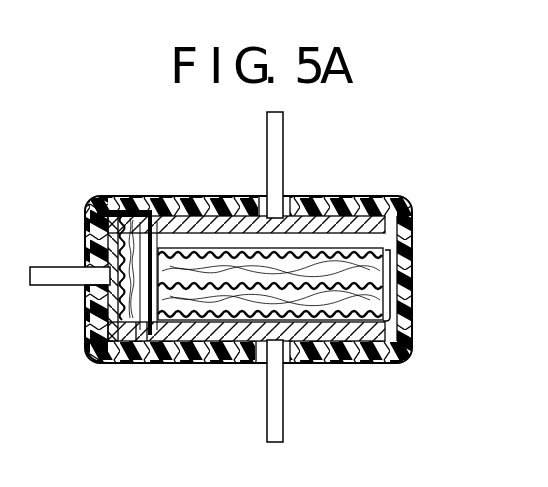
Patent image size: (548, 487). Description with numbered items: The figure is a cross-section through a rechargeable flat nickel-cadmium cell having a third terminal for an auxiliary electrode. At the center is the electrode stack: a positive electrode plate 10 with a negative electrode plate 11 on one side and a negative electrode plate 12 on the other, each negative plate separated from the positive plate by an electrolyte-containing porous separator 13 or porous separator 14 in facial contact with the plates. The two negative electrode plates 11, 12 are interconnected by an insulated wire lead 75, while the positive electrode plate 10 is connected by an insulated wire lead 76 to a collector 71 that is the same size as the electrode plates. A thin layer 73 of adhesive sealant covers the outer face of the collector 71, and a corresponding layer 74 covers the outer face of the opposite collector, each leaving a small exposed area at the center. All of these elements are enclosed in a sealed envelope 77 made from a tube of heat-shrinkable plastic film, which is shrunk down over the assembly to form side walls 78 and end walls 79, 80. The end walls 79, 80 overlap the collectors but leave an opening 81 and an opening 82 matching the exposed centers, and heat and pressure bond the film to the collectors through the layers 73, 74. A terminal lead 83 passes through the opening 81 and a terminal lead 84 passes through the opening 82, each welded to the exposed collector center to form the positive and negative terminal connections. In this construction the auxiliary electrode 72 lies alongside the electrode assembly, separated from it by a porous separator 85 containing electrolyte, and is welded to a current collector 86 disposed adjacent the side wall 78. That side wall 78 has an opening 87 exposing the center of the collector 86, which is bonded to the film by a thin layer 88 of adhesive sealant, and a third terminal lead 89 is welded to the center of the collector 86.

The positive electrode plate 10 is at (381, 292).
The negative electrode plate 11 is at (382, 252).
The negative electrode plate 12 is at (383, 325).
The porous separator 13 is at (380, 270).
The porous separator 14 is at (382, 307).
The collector 71 is at (343, 225).
The auxiliary electrode 72 is at (107, 358).
The layer of adhesive sealant 73 is at (303, 197).
The layer of adhesive sealant 74 is at (382, 363).
The insulated wire lead 75 is at (392, 281).
The insulated wire lead 76 is at (150, 210).
The sealed envelope 77 is at (87, 237).
The side wall 78 is at (87, 328).
The end wall 79 is at (181, 196).
The end wall 80 is at (205, 360).
The opening 81 is at (263, 213).
The opening 82 is at (260, 363).
The terminal lead 83 is at (268, 134).
The terminal lead 84 is at (278, 412).
The porous separator 85 is at (134, 357).
The current collector 86 is at (102, 348).
The opening 87 is at (87, 292).
The layer of adhesive sealant 88 is at (98, 233).
The third terminal lead 89 is at (70, 273).